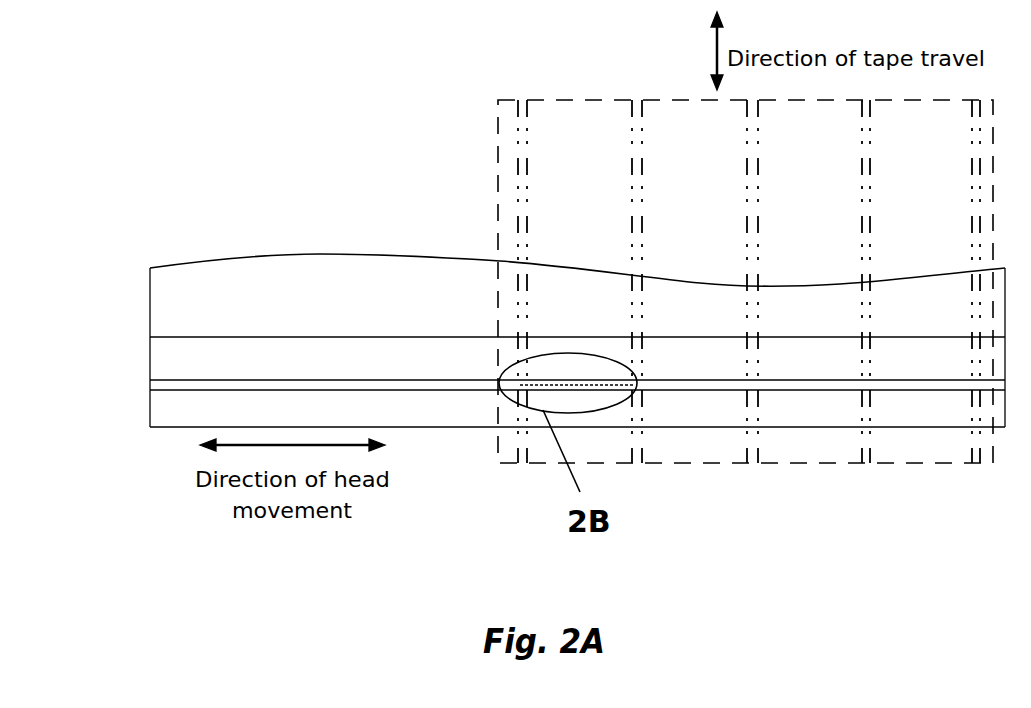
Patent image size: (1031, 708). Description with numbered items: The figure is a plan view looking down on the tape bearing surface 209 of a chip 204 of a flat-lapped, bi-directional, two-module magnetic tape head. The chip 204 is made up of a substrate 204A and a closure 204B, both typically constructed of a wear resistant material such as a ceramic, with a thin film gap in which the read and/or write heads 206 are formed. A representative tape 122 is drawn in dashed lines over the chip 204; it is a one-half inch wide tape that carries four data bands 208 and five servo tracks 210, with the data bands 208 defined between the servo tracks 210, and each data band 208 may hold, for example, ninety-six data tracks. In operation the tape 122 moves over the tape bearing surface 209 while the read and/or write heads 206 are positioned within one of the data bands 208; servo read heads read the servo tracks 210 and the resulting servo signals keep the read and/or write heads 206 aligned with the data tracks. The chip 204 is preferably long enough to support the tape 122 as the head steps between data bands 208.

The tape 122 is at (497, 107).
The chip 204 is at (521, 340).
The substrate 204A is at (313, 254).
The closure 204B is at (150, 410).
The read and/or write heads 206 is at (499, 383).
The data bands 208 is at (690, 118).
The tape bearing surface 209 is at (383, 362).
The servo tracks 210 is at (630, 200).